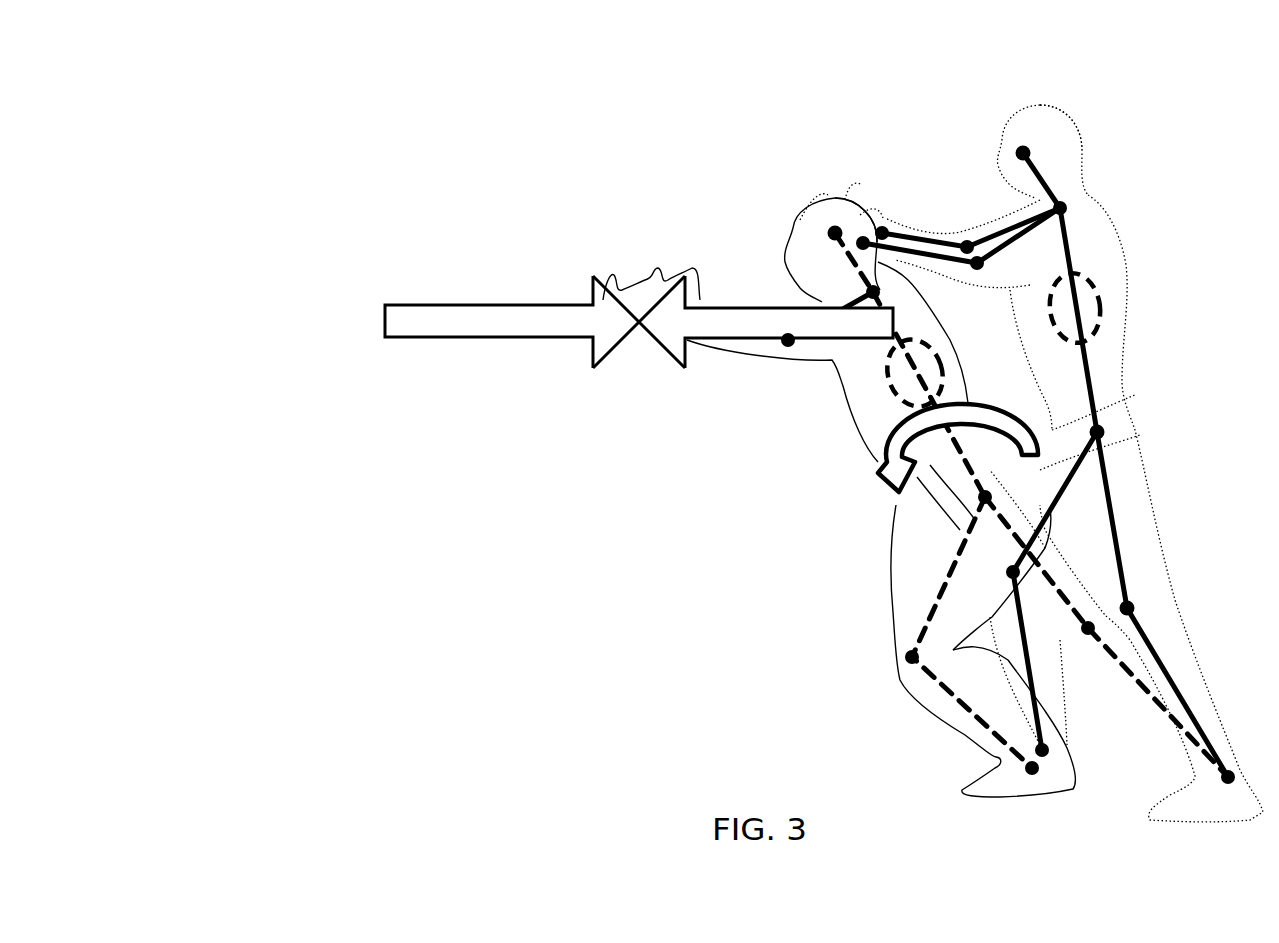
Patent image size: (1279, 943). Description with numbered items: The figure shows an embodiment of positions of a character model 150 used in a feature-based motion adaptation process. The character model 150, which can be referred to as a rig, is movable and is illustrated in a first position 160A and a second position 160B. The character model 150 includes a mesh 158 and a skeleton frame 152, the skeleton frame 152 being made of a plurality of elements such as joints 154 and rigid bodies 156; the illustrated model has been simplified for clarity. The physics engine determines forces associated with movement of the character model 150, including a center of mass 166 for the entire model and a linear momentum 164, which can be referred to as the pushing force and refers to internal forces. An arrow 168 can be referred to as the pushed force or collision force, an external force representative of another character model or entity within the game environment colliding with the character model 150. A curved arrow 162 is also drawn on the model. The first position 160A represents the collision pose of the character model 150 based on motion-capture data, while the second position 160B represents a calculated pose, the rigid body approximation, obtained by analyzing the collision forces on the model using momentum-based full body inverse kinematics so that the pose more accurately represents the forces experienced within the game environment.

The character model 150 is at (1045, 107).
The skeleton frame 152 is at (1040, 172).
The joints 154 is at (1110, 428).
The rigid bodies 156 is at (1122, 503).
The mesh 158 is at (1000, 152).
The first position 160A is at (1012, 101).
The second position 160B is at (765, 170).
The rotation arrow 162 is at (880, 470).
The linear momentum 164 is at (786, 306).
The center of mass 166 is at (1093, 285).
The arrow 168 is at (393, 303).